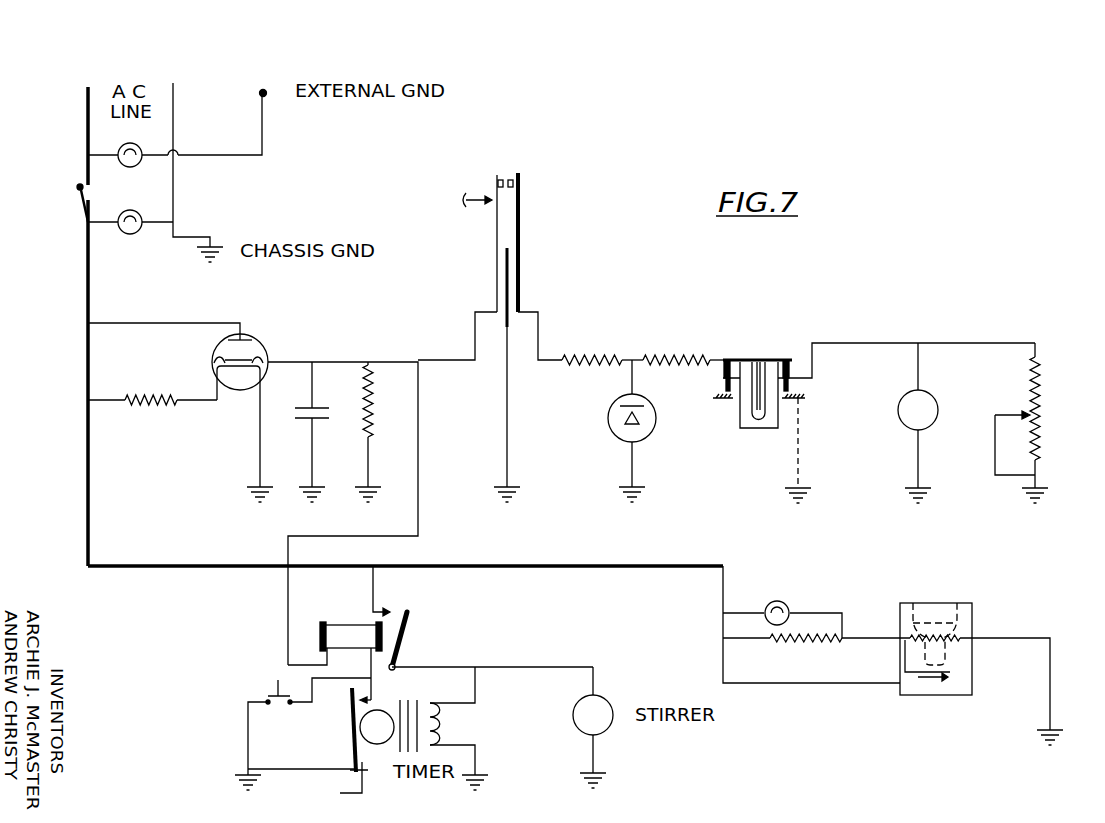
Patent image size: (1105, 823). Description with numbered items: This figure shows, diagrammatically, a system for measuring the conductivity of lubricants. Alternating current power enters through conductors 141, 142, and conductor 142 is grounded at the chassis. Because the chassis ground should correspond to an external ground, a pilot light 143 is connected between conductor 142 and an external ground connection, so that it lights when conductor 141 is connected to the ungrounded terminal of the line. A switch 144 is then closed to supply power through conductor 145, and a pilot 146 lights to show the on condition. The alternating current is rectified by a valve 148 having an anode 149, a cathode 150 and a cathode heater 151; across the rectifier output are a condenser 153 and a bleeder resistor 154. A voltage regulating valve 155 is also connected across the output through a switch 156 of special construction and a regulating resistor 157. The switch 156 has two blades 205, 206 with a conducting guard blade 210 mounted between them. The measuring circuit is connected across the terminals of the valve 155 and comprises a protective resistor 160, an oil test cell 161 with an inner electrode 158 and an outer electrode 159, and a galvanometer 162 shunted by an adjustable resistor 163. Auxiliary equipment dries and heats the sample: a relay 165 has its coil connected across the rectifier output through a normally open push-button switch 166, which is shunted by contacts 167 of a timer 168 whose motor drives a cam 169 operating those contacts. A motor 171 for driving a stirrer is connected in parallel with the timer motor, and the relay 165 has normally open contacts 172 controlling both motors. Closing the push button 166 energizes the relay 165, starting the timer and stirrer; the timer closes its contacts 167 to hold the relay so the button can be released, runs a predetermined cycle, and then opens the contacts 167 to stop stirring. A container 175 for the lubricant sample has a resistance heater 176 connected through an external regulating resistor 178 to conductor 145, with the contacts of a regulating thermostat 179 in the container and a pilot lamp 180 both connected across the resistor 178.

The conductor 141 is at (87, 110).
The conductor 142 is at (176, 95).
The pilot light 143 is at (143, 150).
The switch 144 is at (76, 186).
The conductor 145 is at (87, 260).
The pilot 146 is at (143, 218).
The valve 148 is at (253, 489).
The anode 149 is at (228, 340).
The cathode 150 is at (212, 360).
The cathode heater 151 is at (215, 368).
The condenser 153 is at (316, 406).
The bleeder resistor 154 is at (371, 406).
The voltage regulating valve 155 is at (646, 401).
The switch 156 is at (507, 337).
The regulating resistor 157 is at (590, 356).
The inner electrode 158 is at (744, 420).
The outer electrode 159 is at (752, 418).
The protective resistor 160 is at (668, 356).
The oil test cell 161 is at (862, 402).
The galvanometer 162 is at (935, 398).
The adjustable resistor 163 is at (1040, 416).
The relay 165 is at (344, 624).
The push-button switch 166 is at (258, 699).
The contacts 167 is at (350, 694).
The timer 168 is at (428, 690).
The cam 169 is at (376, 729).
The motor 171 is at (612, 704).
The contacts 172 is at (394, 609).
The container 175 is at (965, 654).
The resistance heater 176 is at (950, 638).
The external regulating resistor 178 is at (814, 635).
The regulating thermostat 179 is at (935, 675).
The pilot lamp 180 is at (786, 603).
The blade 205 is at (497, 261).
The blade 206 is at (521, 261).
The conducting guard blade 210 is at (505, 323).